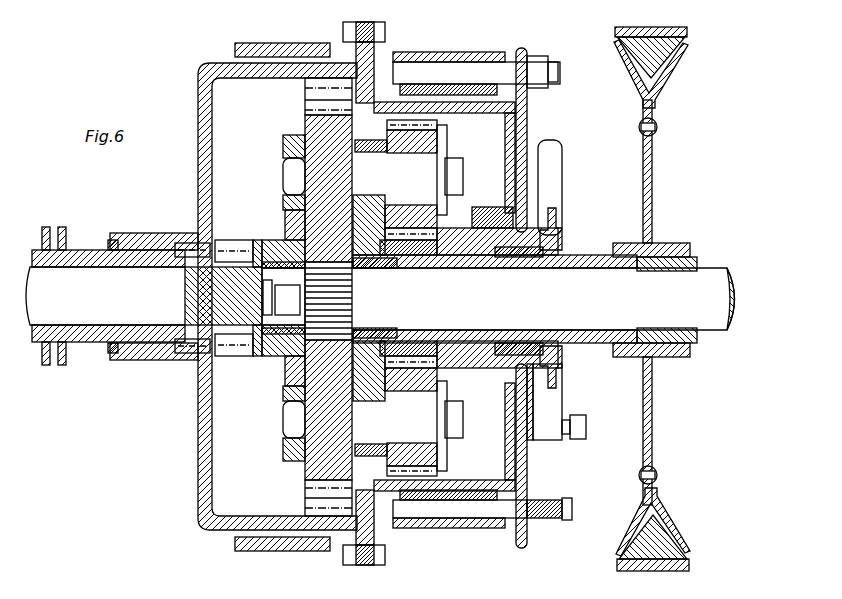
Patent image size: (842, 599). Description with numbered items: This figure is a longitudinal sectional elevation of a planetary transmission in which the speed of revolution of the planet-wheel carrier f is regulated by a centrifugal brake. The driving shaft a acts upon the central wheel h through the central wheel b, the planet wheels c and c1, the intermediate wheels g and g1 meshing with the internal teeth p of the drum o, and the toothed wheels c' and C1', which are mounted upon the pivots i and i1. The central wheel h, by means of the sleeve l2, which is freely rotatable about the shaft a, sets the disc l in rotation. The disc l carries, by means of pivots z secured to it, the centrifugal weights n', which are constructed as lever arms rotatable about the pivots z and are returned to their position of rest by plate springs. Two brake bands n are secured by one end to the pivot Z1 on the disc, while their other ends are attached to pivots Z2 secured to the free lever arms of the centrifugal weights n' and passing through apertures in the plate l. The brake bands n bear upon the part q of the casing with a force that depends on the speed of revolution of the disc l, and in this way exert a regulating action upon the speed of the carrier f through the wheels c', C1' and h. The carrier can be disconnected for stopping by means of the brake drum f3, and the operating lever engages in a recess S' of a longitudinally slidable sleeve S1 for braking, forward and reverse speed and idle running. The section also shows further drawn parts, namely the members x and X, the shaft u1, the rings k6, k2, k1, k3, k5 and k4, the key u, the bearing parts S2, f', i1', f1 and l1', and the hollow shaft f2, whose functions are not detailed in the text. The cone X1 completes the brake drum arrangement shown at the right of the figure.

The drum o is at (212, 106).
The top plate x is at (245, 43).
The bottom plate X is at (258, 551).
The longitudinally slidable sleeve S1 is at (62, 252).
The input shaft u1 is at (144, 296).
The ring k6 is at (113, 240).
The ball bearing S2 is at (205, 252).
The roller bearing k2 is at (248, 250).
The key u is at (283, 298).
The central wheel b is at (348, 302).
The planet wheel c is at (307, 188).
The planet wheel c1 is at (305, 462).
The internal teeth p is at (318, 92).
The intermediate wheel g is at (320, 100).
The intermediate wheel g1 is at (320, 497).
The pivot i is at (285, 185).
The pivot i1 is at (278, 412).
The planet-wheel carrier f is at (285, 292).
The part of the casing q is at (503, 112).
The disc l is at (527, 106).
The brake band n is at (476, 292).
The pivot Z1 is at (548, 70).
The pivot Z2 is at (515, 520).
The centrifugal weight n' is at (567, 183).
The ring f' is at (371, 135).
The toothed wheel c' is at (425, 170).
The bearing i1' is at (399, 155).
The central wheel h is at (430, 226).
The ring k1 is at (413, 256).
The ring k3 is at (373, 268).
The sleeve l2 is at (455, 258).
The ring k5 is at (474, 222).
The ring k4 is at (530, 348).
The ring lower f1 is at (358, 456).
The toothed wheel C1' is at (429, 428).
The bearing lower l1' is at (369, 418).
The recess S' is at (556, 402).
The pivot z is at (580, 436).
The hollow shaft f2 is at (553, 264).
The driving shaft a is at (544, 299).
The brake drum f3 is at (652, 170).
The cone X1 is at (617, 30).